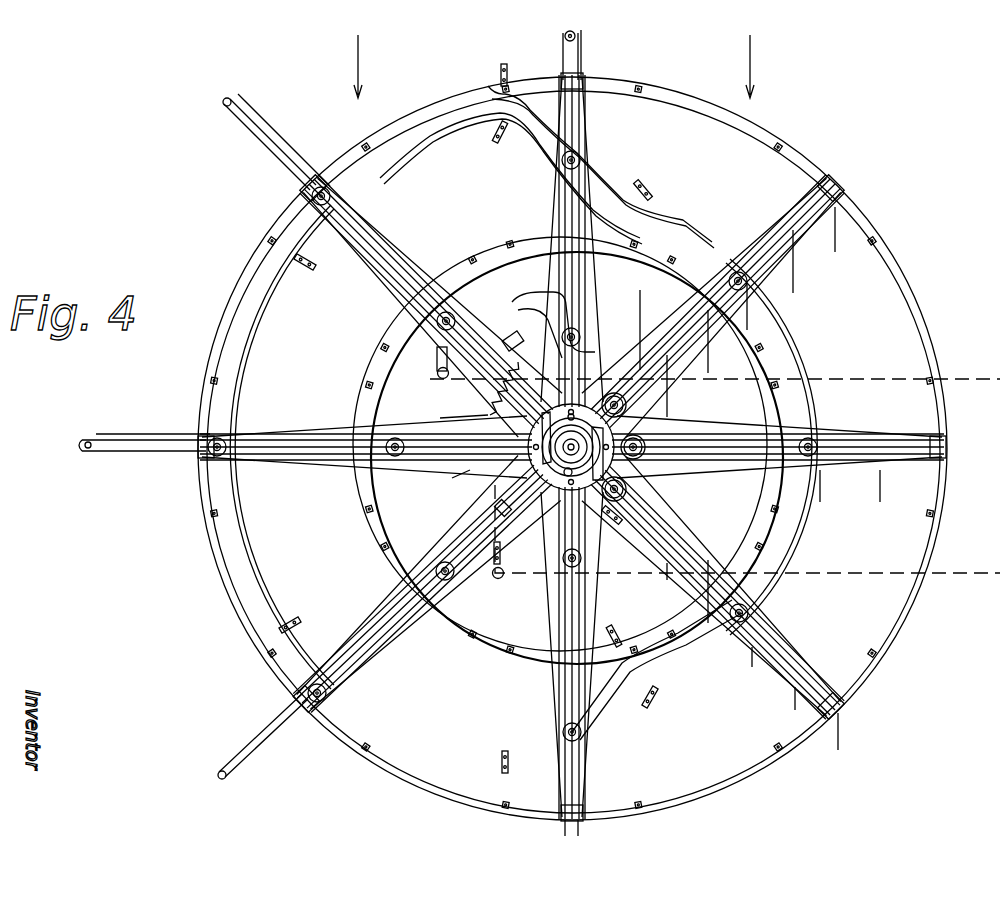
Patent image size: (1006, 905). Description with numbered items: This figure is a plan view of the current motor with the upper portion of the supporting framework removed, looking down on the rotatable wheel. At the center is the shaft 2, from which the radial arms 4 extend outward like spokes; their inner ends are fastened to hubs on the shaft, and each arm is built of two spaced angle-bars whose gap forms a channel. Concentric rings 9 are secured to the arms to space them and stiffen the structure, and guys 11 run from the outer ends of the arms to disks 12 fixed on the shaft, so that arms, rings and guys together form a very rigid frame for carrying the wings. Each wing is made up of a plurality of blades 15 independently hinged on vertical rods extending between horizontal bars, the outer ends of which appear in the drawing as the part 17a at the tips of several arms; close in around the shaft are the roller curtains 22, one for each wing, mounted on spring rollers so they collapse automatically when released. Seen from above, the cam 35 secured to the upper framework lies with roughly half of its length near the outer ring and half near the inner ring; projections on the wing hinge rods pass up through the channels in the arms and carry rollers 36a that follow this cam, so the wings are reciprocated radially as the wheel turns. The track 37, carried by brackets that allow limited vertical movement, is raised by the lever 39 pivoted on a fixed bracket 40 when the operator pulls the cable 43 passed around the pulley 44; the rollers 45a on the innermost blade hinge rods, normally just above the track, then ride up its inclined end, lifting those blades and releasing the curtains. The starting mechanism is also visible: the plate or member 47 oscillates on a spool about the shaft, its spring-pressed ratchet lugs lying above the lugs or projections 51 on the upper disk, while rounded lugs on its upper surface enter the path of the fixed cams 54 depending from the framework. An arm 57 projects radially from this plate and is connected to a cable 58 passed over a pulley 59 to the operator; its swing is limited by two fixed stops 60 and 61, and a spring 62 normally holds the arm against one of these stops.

The shaft 2 is at (583, 485).
The radial arms 4 is at (372, 250).
The concentric rings 9 is at (224, 580).
The guys 11 is at (400, 265).
The disks 12 is at (604, 460).
The blades 15 is at (584, 50).
The arm extension 17a is at (563, 50).
The roller curtains 22 is at (475, 472).
The cam 35 is at (244, 540).
The rollers 36a is at (350, 170).
The track 37 is at (548, 291).
The lever 39 is at (512, 380).
The fixed bracket 40 is at (514, 334).
The cable 43 is at (436, 355).
The pulley 44 is at (437, 373).
The rollers 45a is at (455, 318).
The plate or member 47 is at (612, 392).
The lugs or projections 51 is at (565, 478).
The fixed cams 54 is at (638, 436).
The arm 57 is at (538, 418).
The cable 58 is at (505, 452).
The pulley 59 is at (497, 580).
The fixed stop 60 is at (568, 414).
The fixed stop 61 is at (506, 514).
The spring 62 is at (454, 406).